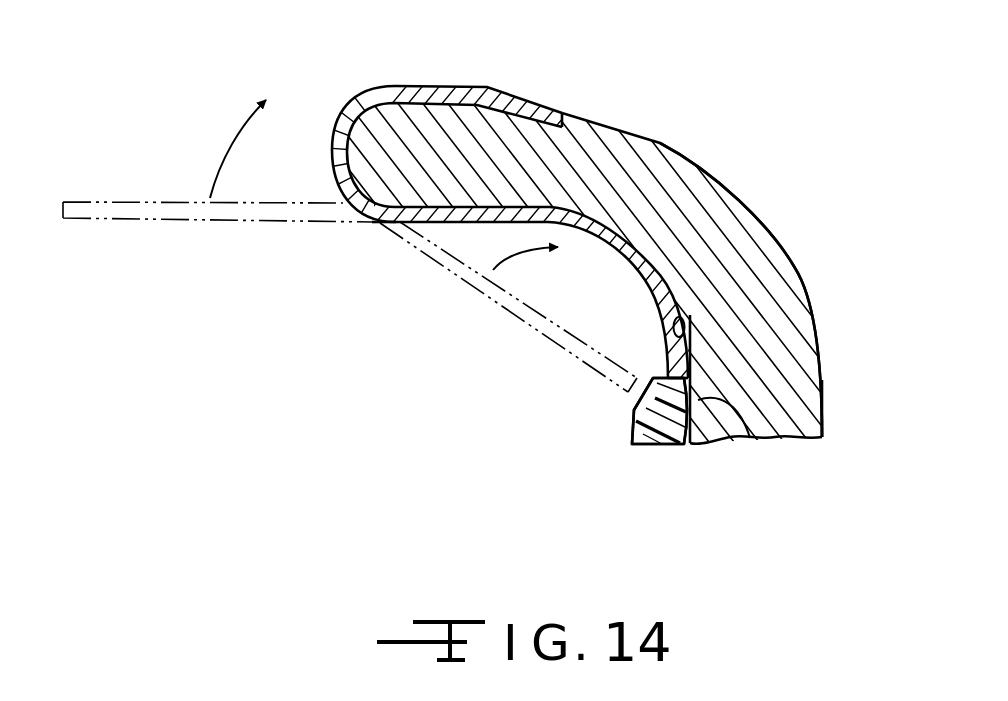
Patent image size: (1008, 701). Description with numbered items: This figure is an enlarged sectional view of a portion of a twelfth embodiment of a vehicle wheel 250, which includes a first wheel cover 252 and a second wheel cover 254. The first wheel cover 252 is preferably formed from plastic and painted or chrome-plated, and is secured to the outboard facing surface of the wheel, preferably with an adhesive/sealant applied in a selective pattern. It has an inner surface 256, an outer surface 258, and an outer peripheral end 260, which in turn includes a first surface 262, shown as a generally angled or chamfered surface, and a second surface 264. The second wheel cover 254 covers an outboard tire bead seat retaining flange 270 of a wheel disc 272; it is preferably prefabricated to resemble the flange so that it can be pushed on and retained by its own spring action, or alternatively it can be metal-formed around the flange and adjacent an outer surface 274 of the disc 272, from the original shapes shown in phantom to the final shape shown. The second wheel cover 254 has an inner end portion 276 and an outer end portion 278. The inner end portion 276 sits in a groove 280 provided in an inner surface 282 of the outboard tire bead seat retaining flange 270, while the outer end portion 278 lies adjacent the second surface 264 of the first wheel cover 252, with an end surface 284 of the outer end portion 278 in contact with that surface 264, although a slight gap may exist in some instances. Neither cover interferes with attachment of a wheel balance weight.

The vehicle wheel 250 is at (481, 347).
The first wheel cover 252 is at (630, 421).
The second wheel cover 254 is at (372, 229).
The inner surface 256 is at (758, 438).
The outer surface 258 is at (633, 445).
The outer peripheral end 260 is at (644, 378).
The first surface 262 is at (632, 408).
The second surface 264 is at (662, 378).
The outboard tire bead seat retaining flange 270 is at (740, 230).
The wheel disc 272 is at (806, 277).
The outer surface 274 is at (683, 318).
The inner end portion 276 is at (472, 100).
The outer end portion 278 is at (692, 370).
The groove 280 is at (533, 107).
The inner surface 282 is at (822, 385).
The end surface 284 is at (687, 445).